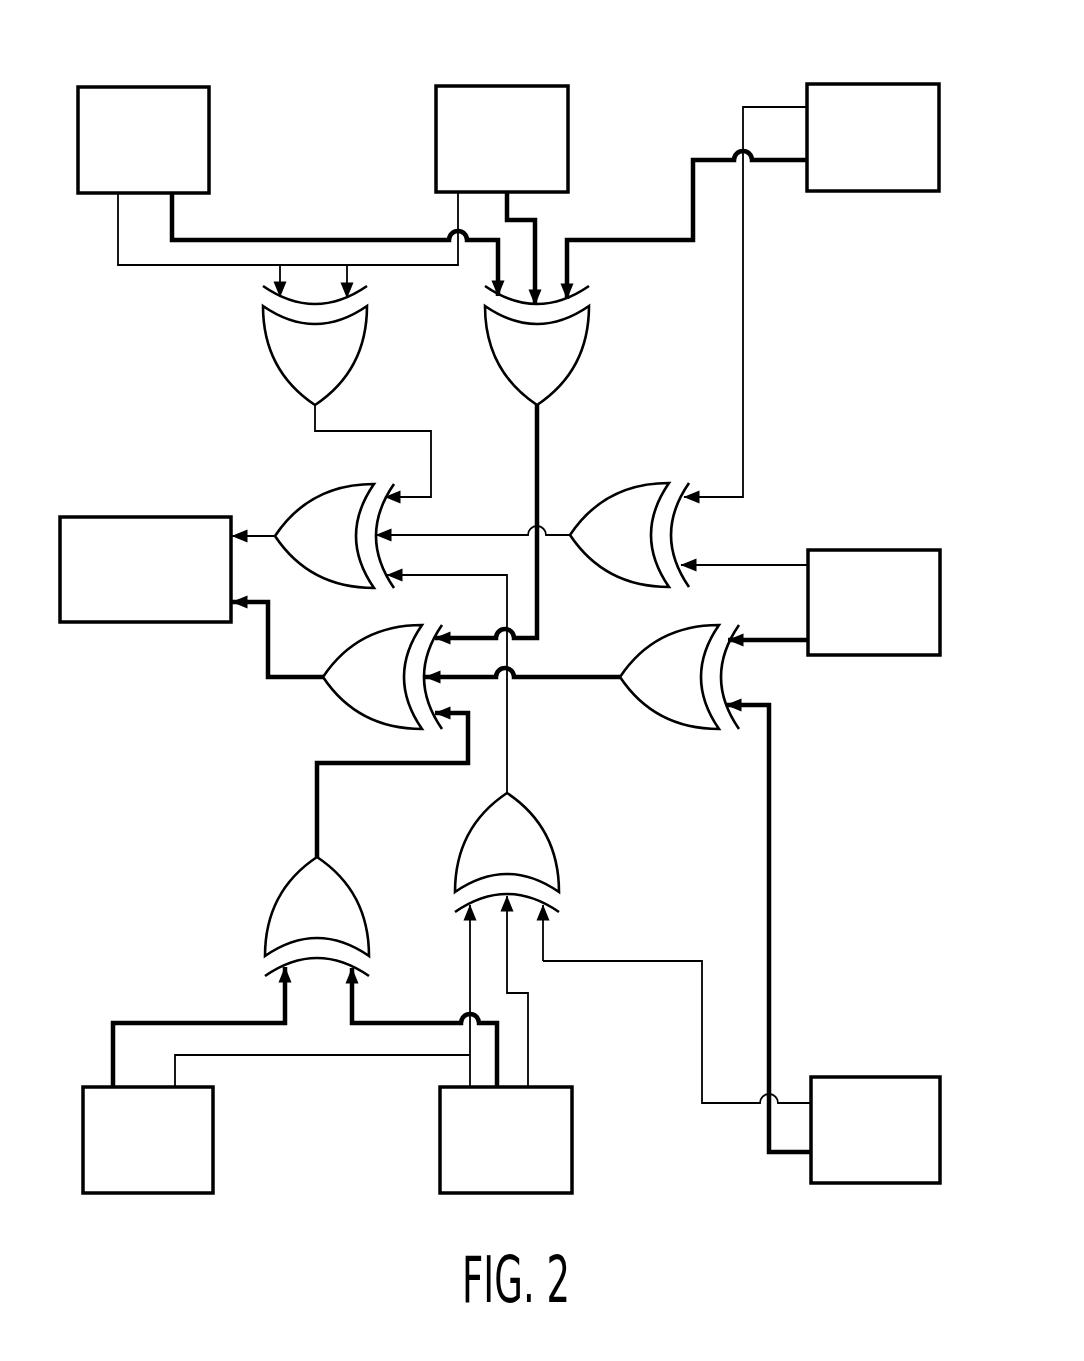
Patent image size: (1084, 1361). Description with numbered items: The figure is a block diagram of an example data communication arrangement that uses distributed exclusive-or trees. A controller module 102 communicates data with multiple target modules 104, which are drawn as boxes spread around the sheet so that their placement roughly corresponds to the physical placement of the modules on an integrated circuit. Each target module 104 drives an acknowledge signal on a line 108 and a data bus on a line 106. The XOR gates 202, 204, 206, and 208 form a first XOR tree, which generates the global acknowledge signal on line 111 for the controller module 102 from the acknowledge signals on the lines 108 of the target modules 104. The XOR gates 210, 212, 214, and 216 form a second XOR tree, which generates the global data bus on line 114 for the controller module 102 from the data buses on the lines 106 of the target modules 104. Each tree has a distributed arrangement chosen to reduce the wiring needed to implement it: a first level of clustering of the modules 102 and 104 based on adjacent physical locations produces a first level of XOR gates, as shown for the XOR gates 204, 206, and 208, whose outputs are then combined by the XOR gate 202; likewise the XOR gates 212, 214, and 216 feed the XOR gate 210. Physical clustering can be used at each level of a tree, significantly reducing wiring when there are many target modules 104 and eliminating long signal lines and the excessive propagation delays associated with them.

The controller module 102 is at (98, 515).
The target module 104 is at (210, 97).
The data bus line 106 is at (312, 238).
The acknowledge signal line 108 is at (193, 267).
The global acknowledge signal line 111 is at (262, 528).
The global data bus line 114 is at (265, 652).
The XOR gate 202 is at (312, 490).
The XOR gate 204 is at (278, 382).
The XOR gate 206 is at (615, 490).
The XOR gate 208 is at (558, 857).
The XOR gate 210 is at (356, 718).
The XOR gate 212 is at (583, 360).
The XOR gate 214 is at (681, 728).
The XOR gate 216 is at (266, 912).